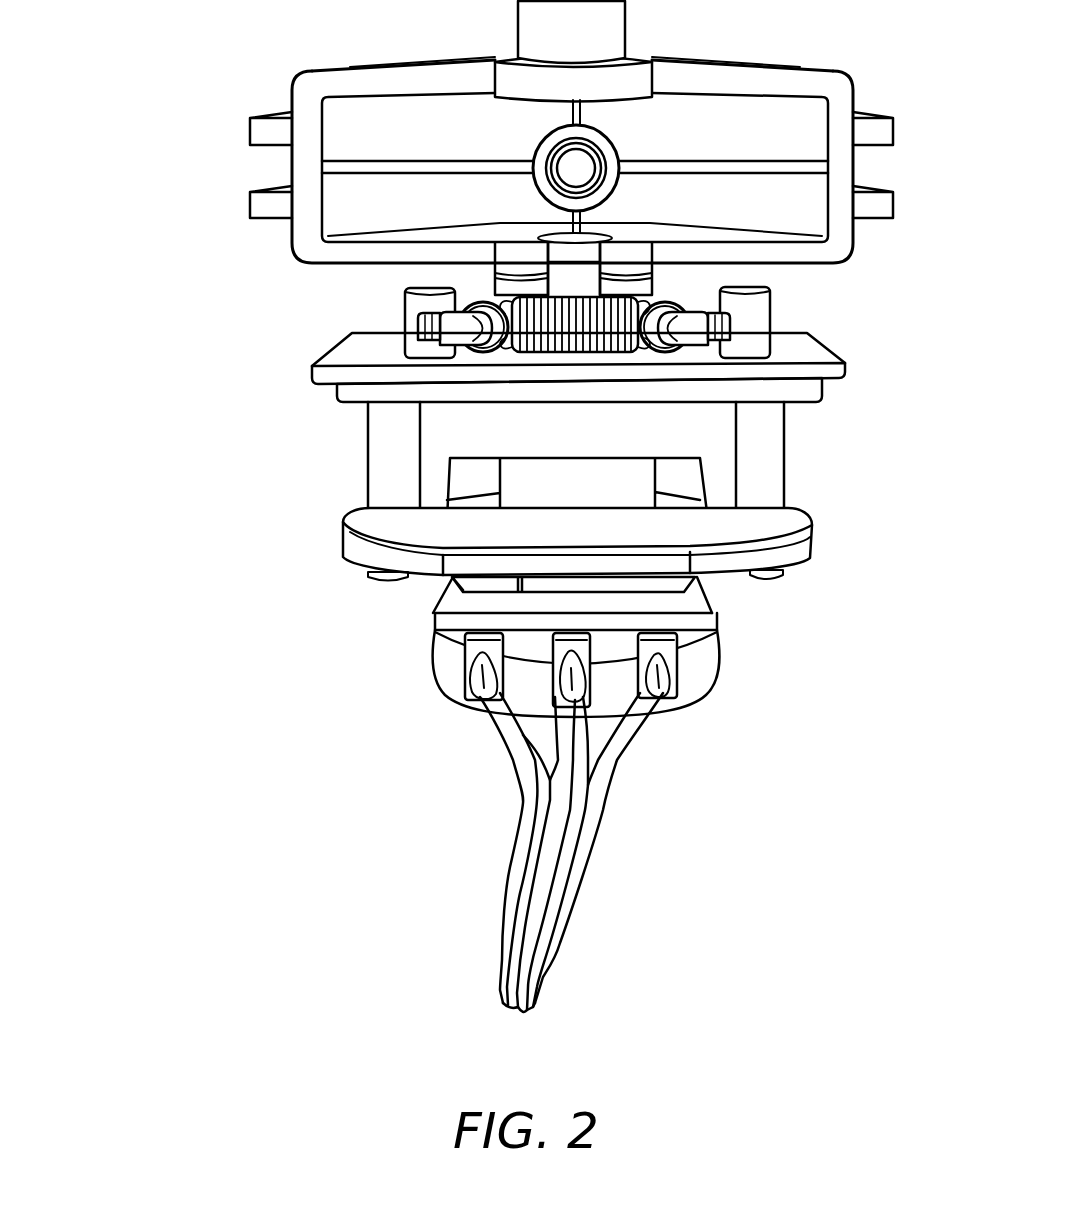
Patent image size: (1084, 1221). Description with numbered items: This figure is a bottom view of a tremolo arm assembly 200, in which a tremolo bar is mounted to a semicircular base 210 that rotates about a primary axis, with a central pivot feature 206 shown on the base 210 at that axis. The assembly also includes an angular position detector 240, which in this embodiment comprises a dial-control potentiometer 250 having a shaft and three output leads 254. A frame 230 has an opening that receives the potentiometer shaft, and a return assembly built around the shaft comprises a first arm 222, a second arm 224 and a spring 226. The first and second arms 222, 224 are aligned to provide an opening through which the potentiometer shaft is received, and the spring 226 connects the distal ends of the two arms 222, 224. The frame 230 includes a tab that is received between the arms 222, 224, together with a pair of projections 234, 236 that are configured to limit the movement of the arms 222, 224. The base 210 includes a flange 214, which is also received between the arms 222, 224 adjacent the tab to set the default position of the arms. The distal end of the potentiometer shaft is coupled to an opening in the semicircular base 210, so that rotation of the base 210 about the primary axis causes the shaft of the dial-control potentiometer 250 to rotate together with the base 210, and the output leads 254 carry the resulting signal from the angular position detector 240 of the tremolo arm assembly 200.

The tremolo arm assembly 200 is at (174, 877).
The bearing / pivot 206 is at (577, 175).
The semicircular base 210 is at (835, 76).
The flange 214 is at (632, 287).
The first arm 222 is at (422, 327).
The second arm 224 is at (697, 331).
The spring 226 is at (601, 358).
The frame 230 is at (770, 452).
The projection 234 is at (412, 300).
The projection 236 is at (762, 303).
The angular position detector 240 is at (265, 604).
The dial-control potentiometer 250 is at (712, 666).
The output leads 254 is at (459, 740).